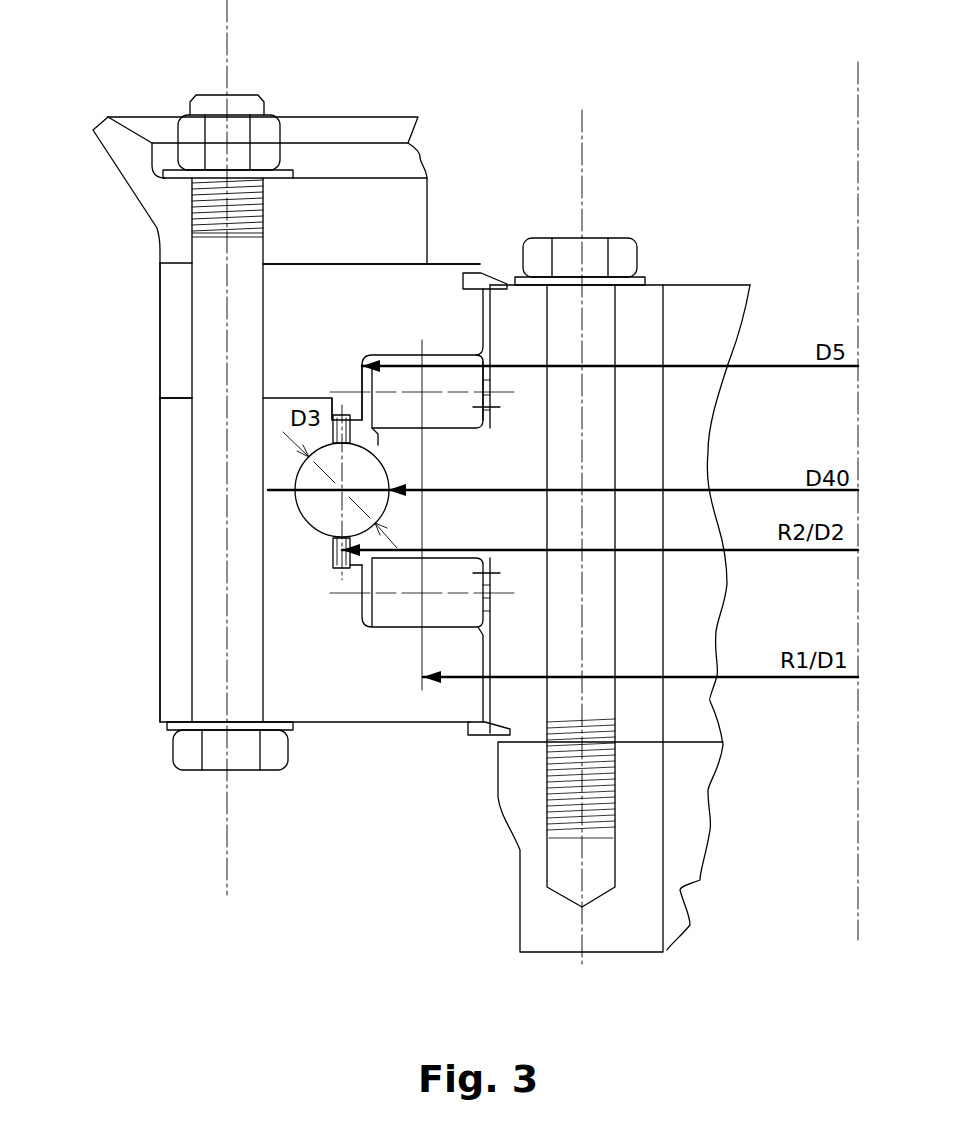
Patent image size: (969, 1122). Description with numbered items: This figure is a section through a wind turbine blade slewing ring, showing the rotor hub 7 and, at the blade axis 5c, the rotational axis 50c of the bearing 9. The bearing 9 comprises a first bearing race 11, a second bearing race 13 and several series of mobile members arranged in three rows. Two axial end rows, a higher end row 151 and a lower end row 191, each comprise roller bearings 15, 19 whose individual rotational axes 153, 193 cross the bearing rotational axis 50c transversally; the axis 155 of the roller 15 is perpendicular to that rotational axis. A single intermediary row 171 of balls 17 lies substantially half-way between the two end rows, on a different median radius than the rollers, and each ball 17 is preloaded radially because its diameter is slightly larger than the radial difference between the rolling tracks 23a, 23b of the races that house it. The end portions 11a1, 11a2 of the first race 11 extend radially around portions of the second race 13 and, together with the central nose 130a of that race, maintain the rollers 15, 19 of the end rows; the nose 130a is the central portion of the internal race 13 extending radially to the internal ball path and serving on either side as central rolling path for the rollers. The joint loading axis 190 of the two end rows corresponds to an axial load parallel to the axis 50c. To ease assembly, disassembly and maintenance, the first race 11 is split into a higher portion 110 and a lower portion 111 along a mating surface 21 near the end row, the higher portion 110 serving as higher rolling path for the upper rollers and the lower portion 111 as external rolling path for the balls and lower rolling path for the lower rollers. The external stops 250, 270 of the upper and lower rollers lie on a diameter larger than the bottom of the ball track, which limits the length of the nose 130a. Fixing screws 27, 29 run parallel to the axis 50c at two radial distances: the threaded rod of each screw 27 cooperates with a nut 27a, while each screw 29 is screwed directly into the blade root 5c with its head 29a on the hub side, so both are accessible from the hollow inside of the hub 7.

The blade axis / blade root 5c is at (622, 918).
The rotor hub 7 is at (382, 138).
The bearing (slewing ring) 9 is at (492, 262).
The first bearing race 11 is at (150, 578).
The end portion of the first bearing race 11a1 is at (404, 305).
The end portion of the first bearing race 11a2 is at (443, 693).
The second bearing race 13 is at (651, 294).
The roller bearing 15 is at (433, 355).
The ball 17 is at (300, 526).
The roller bearing 19 is at (400, 622).
The mating surface 21 is at (173, 400).
The rolling track 23a is at (293, 478).
The rolling track 23b is at (393, 448).
The screw / fixing means 27 is at (197, 253).
The nut 27a is at (178, 130).
The screw / fixing means 29 is at (593, 300).
The head of fixing means 29 29a is at (537, 250).
The rotational axis 50c is at (855, 108).
The higher portion of the first race 110 is at (177, 292).
The lower portion of the first race 111 is at (175, 662).
The central nose 130a is at (434, 492).
The higher end row 151 is at (500, 407).
The rotational axis of roller bearing 153 is at (338, 392).
The rotational axis of roller bearing 155 is at (443, 392).
The intermediary row 171 is at (385, 482).
The joint loading axis 190 is at (422, 665).
The lower end row 191 is at (500, 573).
The rotational axis of roller bearing 193 is at (342, 594).
The external stop of the higher row 250 is at (365, 375).
The external stop of the lower row 270 is at (350, 613).